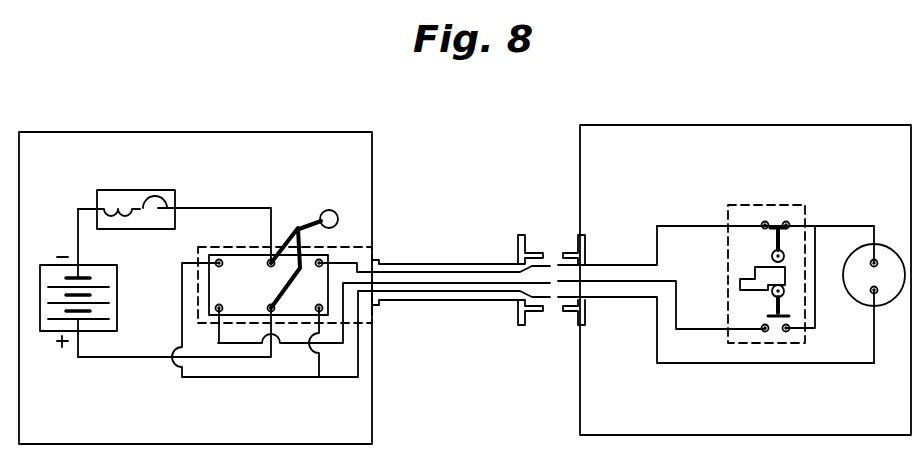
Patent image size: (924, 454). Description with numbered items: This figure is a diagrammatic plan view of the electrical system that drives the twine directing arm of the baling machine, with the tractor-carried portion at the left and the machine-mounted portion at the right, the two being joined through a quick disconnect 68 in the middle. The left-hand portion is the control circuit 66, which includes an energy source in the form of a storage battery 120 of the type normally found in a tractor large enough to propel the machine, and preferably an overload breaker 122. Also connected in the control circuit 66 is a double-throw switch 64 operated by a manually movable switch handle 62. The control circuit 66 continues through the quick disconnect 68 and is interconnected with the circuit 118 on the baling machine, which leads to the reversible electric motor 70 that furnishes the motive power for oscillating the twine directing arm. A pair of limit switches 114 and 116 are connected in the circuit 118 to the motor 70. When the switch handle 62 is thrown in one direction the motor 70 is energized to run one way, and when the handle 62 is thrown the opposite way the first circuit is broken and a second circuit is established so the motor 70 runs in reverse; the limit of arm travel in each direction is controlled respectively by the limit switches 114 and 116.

The storage battery 120 is at (45, 264).
The overload breaker 122 is at (124, 190).
The switch handle 62 is at (302, 226).
The double-throw switch 64 is at (285, 275).
The control circuit 66 is at (260, 378).
The quick disconnect 68 is at (561, 228).
The limit switch 114 is at (778, 224).
The limit switch 116 is at (780, 332).
The circuit 118 is at (700, 364).
The electric motor 70 is at (860, 302).